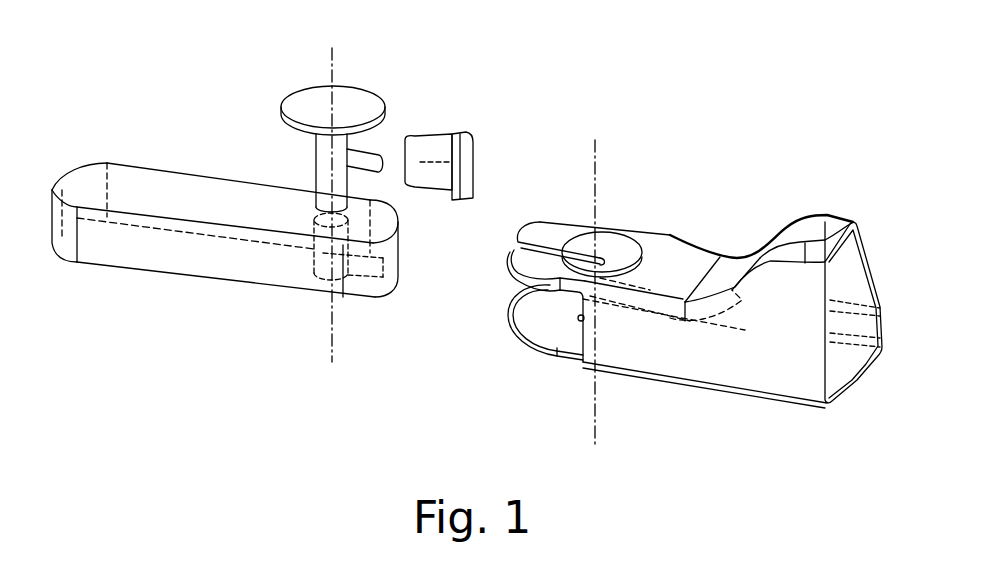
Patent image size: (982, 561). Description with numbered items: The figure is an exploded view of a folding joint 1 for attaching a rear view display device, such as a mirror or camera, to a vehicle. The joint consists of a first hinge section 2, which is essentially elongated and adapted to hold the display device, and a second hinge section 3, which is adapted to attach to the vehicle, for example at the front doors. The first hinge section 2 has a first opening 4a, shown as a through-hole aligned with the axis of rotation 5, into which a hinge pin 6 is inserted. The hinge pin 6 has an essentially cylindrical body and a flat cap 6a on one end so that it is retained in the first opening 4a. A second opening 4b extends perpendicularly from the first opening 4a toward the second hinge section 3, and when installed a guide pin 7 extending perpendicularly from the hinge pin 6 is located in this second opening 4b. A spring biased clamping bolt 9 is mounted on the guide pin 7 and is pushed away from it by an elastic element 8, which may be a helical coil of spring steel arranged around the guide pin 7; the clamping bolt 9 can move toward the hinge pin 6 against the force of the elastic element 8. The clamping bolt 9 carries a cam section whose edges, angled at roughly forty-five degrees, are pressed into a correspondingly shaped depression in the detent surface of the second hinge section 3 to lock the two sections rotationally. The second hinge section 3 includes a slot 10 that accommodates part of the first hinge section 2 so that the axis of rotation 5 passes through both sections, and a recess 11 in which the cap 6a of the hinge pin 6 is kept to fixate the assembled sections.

The folding joint 1 is at (556, 140).
The first hinge section 2 is at (195, 260).
The second hinge section 3 is at (795, 368).
The first opening 4a is at (312, 281).
The second opening 4b is at (395, 272).
The axis of rotation 5 is at (335, 372).
The hinge pin 6 is at (367, 83).
The cap 6a is at (278, 98).
The guide pin 7 is at (375, 150).
The elastic element 8 is at (428, 148).
The clamping bolt 9 is at (478, 160).
The slot 10 is at (545, 324).
The recess 11 is at (628, 226).